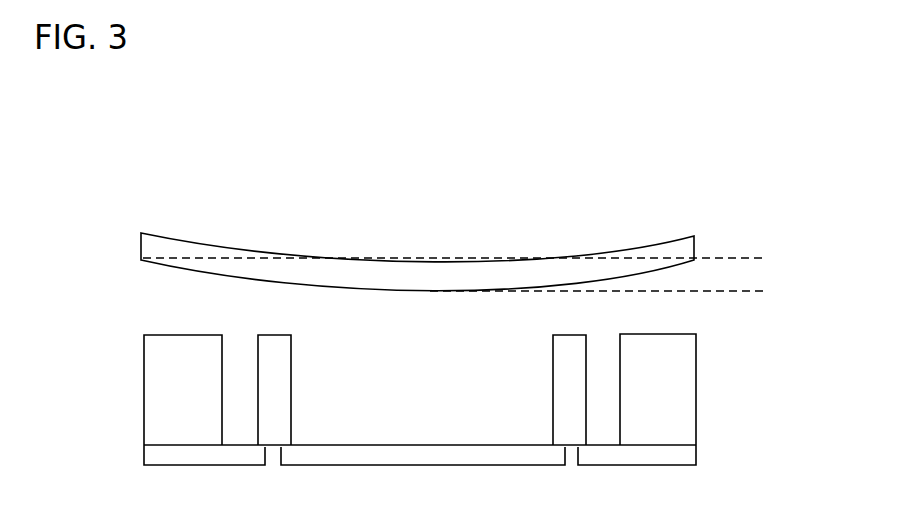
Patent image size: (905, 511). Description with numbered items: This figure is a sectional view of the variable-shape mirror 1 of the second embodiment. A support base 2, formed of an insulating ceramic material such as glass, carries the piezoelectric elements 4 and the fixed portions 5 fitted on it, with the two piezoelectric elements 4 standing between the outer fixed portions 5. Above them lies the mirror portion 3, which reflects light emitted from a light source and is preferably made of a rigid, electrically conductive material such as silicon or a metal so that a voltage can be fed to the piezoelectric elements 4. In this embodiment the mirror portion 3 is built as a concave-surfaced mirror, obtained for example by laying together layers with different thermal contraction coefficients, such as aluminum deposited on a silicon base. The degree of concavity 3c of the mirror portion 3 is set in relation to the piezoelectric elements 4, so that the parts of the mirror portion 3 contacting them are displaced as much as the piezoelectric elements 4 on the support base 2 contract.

The variable-shape mirror 1 is at (741, 209).
The support base 2 is at (676, 455).
The mirror portion 3 is at (639, 244).
The degree of concavity 3c is at (755, 258).
The piezoelectric elements 4 is at (560, 356).
The fixed portions 5 is at (633, 337).